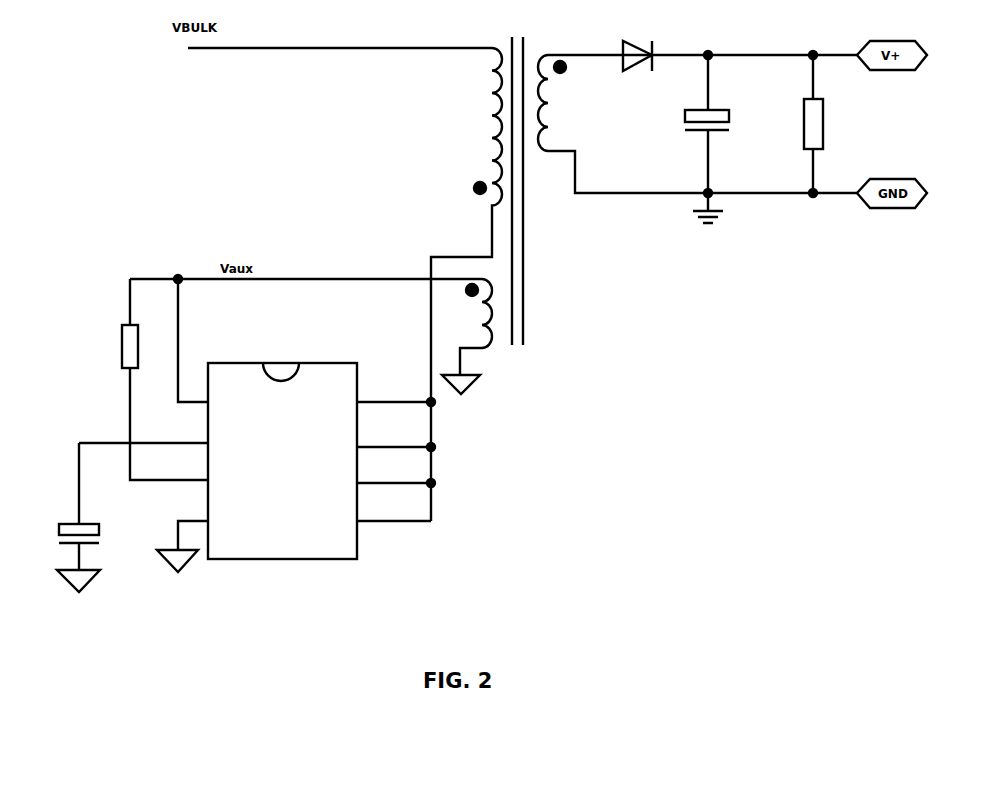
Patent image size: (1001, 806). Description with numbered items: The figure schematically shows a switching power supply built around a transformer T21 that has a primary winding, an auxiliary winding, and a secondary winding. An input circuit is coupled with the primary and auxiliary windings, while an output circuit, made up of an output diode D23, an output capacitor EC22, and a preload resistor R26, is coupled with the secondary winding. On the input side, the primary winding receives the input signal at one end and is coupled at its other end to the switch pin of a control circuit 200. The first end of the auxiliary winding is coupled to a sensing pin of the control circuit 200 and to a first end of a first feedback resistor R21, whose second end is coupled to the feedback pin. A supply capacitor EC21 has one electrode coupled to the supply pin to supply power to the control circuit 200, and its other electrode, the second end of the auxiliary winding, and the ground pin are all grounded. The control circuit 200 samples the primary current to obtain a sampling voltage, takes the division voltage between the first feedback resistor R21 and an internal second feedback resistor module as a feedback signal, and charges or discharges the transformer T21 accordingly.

The control circuit 200 is at (284, 566).
The transformer T21 is at (493, 267).
The output diode D23 is at (639, 47).
The output capacitor EC22 is at (728, 124).
The preload resistor R26 is at (834, 124).
The first feedback resistor R21 is at (165, 379).
The supply capacitor EC21 is at (56, 517).